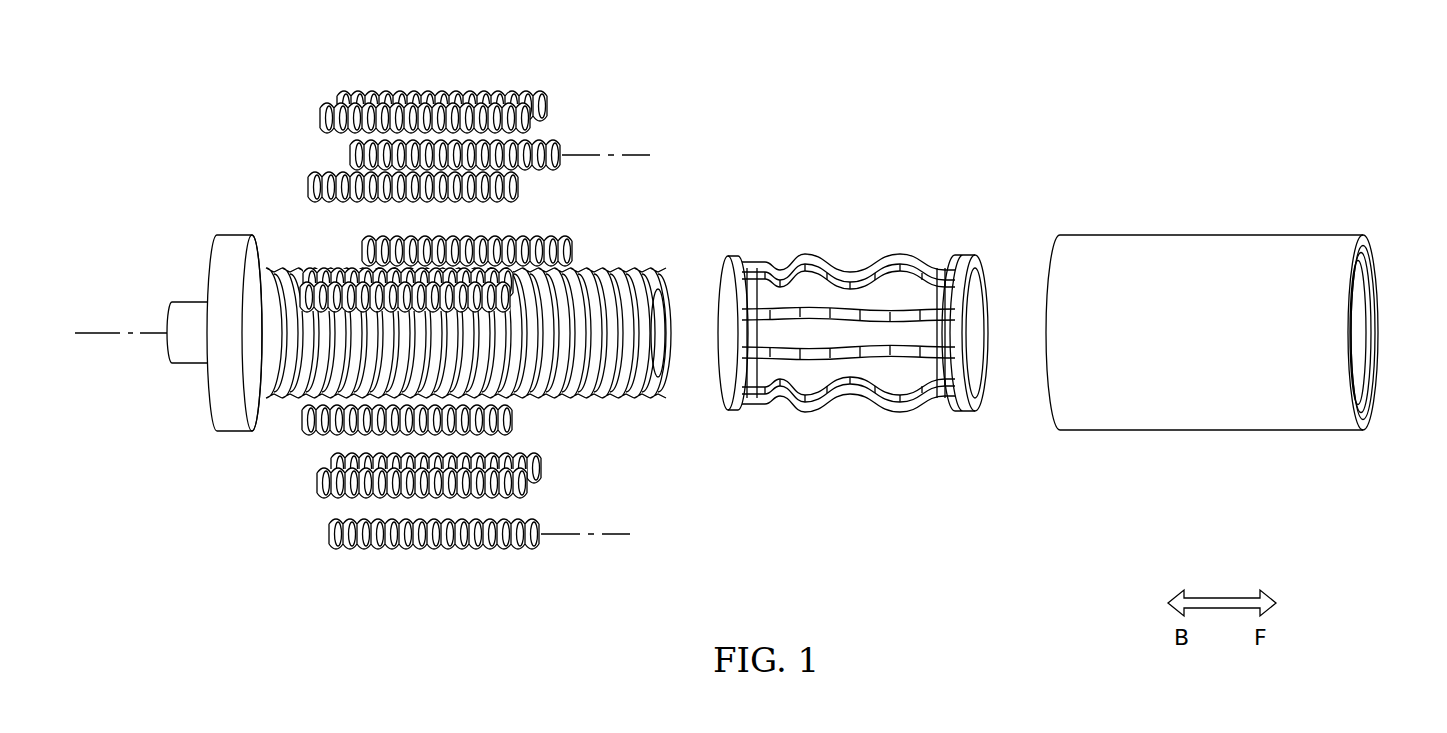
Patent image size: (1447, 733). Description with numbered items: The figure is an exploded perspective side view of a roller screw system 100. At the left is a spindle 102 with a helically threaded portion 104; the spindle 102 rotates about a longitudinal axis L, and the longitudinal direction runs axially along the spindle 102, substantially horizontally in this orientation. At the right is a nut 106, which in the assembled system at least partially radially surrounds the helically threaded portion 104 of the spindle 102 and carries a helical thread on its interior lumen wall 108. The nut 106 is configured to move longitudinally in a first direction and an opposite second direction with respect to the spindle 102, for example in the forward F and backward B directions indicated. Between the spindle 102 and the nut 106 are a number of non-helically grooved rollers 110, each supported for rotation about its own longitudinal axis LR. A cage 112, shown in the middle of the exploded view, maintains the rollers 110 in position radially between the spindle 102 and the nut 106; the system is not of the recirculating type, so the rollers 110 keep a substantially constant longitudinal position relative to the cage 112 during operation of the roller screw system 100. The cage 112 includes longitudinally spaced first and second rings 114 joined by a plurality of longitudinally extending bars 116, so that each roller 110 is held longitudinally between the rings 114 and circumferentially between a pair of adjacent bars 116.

The roller screw system 100 is at (1205, 93).
The spindle 102 is at (245, 485).
The helically threaded portion 104 is at (606, 271).
The nut 106 is at (1203, 458).
The interior lumen wall 108 is at (1358, 326).
The non-helically grooved roller 110 is at (548, 98).
The cage 112 is at (849, 447).
The first and second rings 114 is at (728, 262).
The longitudinally extending bars 116 is at (806, 258).